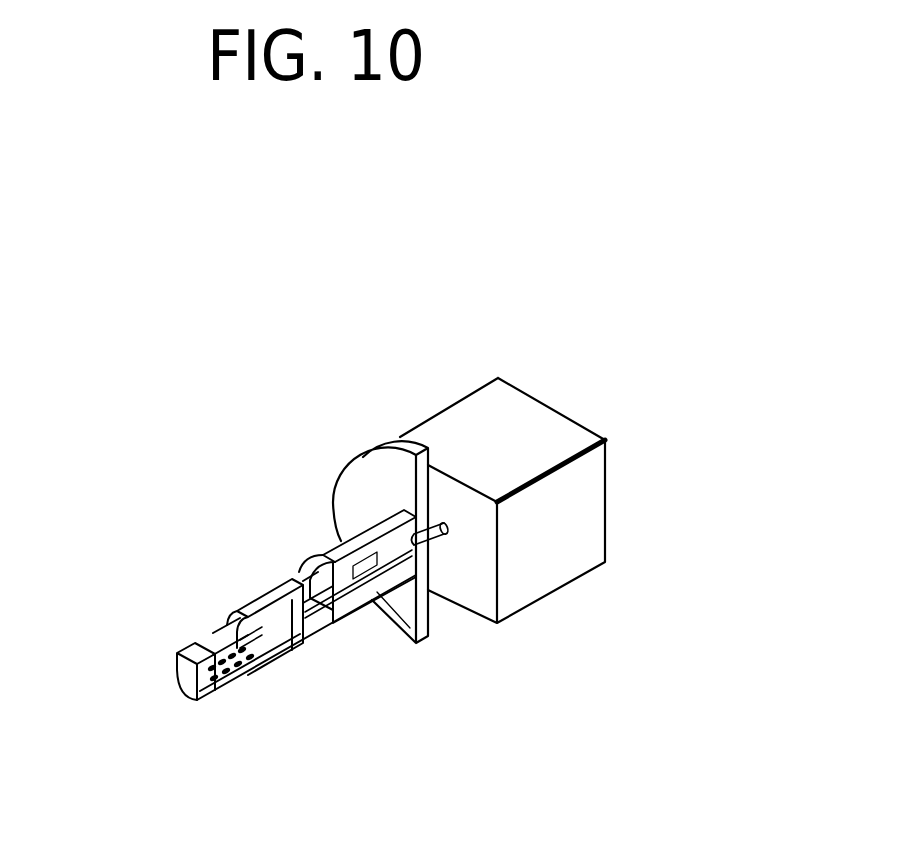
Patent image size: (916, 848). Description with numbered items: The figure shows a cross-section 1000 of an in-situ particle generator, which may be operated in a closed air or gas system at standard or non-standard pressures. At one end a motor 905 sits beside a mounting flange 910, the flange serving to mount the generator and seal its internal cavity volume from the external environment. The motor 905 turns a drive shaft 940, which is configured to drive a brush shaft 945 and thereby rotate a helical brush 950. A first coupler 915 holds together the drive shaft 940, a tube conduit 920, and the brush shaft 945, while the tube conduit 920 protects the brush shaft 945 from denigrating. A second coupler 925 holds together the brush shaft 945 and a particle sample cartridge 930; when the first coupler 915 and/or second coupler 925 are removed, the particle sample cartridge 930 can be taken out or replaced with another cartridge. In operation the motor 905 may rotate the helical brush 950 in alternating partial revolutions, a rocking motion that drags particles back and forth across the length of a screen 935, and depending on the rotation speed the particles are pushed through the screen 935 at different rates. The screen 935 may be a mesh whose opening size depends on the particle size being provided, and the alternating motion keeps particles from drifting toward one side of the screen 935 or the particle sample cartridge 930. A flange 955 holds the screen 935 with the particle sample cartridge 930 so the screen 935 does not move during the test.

The cross-section 1000 is at (810, 203).
The motor 905 is at (576, 559).
The mounting flange 910 is at (372, 476).
The first coupler 915 is at (334, 541).
The tube conduit 920 is at (301, 573).
The second coupler 925 is at (306, 655).
The particle sample cartridge 930 is at (210, 694).
The screen 935 is at (228, 624).
The drive shaft 940 is at (419, 559).
The brush shaft 945 is at (359, 599).
The helical brush 950 is at (247, 643).
The flange 955 is at (184, 636).